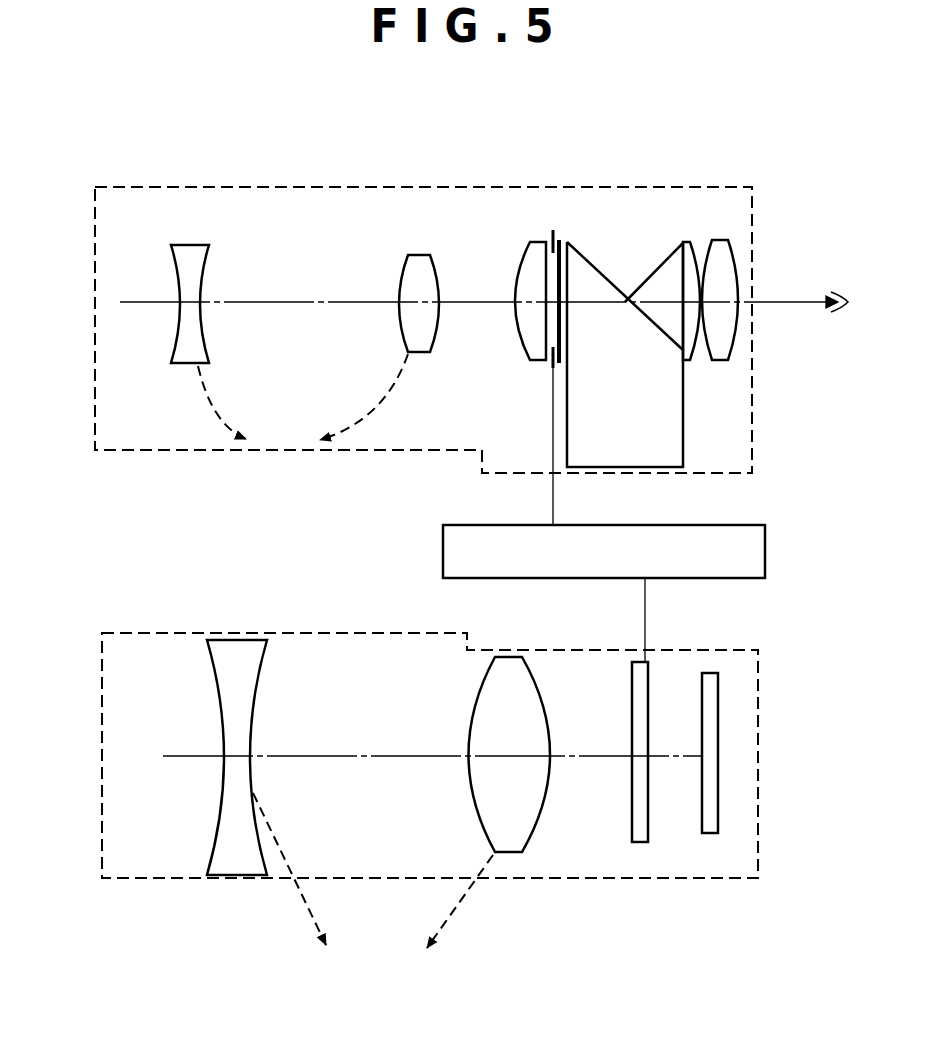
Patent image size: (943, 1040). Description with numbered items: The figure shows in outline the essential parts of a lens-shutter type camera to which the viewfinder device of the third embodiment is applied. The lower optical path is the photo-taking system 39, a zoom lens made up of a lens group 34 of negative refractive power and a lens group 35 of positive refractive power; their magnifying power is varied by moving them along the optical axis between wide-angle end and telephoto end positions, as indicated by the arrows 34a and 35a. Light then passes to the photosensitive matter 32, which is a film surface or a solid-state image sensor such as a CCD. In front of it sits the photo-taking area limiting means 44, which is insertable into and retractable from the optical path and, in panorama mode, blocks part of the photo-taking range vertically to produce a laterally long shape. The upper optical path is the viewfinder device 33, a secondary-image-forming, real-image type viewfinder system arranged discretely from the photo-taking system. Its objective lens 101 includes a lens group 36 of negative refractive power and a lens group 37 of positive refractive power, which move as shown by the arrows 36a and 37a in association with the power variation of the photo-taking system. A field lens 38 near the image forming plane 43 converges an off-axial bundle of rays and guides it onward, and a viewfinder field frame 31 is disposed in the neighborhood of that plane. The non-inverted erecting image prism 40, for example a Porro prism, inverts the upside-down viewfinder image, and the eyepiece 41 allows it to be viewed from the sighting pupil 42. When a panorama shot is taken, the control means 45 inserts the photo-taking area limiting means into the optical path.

The objective lens 101 is at (411, 148).
The viewfinder field frame 31 is at (552, 230).
The photosensitive matter 32 is at (720, 735).
The viewfinder device 33 is at (737, 182).
The lens group of negative refractive power 34 is at (213, 843).
The arrow 34a is at (303, 900).
The lens group of positive refractive power 35 is at (537, 833).
The arrow 35a is at (457, 913).
The lens group of negative refractive power 36 is at (192, 245).
The arrow 36a is at (220, 412).
The lens group of positive refractive power 37 is at (415, 255).
The arrow 37a is at (362, 410).
The field lens 38 is at (535, 243).
The photo-taking system 39 is at (758, 838).
The non-inverted erecting image prism 40 is at (657, 267).
The eyepiece 41 is at (738, 338).
The sighting pupil 42 is at (833, 287).
The image forming plane 43 is at (560, 238).
The photo-taking area limiting means 44 is at (648, 823).
The control means 45 is at (753, 523).